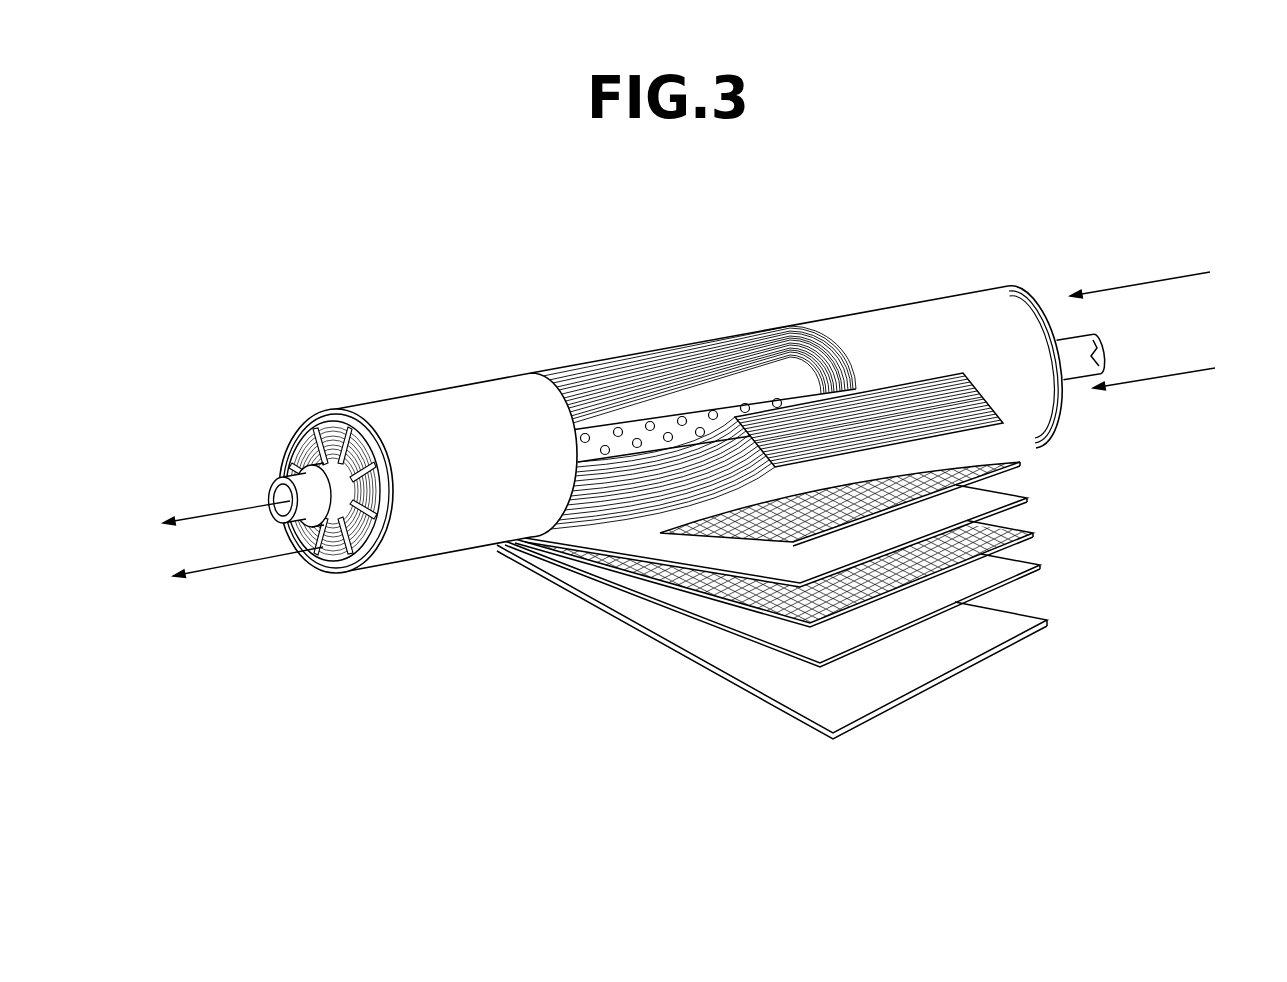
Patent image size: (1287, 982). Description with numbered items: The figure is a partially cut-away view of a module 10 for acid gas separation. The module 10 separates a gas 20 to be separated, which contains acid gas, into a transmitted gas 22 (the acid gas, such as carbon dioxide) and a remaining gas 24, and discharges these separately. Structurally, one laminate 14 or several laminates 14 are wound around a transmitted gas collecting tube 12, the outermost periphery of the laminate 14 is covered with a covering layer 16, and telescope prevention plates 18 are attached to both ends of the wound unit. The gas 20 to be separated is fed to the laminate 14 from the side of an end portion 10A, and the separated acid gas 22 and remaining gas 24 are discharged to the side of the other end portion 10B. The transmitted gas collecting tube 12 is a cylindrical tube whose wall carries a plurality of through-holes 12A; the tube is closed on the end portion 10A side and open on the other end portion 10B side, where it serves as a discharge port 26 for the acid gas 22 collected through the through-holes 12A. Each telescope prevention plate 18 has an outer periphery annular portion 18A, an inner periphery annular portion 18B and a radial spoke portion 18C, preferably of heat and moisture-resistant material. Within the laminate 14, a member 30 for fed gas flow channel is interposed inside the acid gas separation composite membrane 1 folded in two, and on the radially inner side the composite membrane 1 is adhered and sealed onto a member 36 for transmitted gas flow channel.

The acid gas separation composite membrane 1 is at (972, 498).
The module for acid gas separation 10 is at (997, 180).
The end portion 10A is at (1049, 423).
The other end portion 10B is at (323, 565).
The transmitted gas collecting tube 12 is at (760, 400).
The through-holes 12A is at (599, 450).
The laminate 14 is at (1123, 452).
The covering layer 16 is at (1047, 620).
The telescope prevention plate 18 is at (1010, 290).
The outer periphery annular portion 18A is at (333, 422).
The inner periphery annular portion 18B is at (318, 410).
The radial spoke portion 18C is at (300, 427).
The gas to be separated 20 is at (1105, 273).
The transmitted gas (acid gas) 22 is at (204, 513).
The remaining gas 24 is at (219, 569).
The discharge port 26 is at (271, 516).
The member for fed gas flow channel 30 is at (1008, 520).
The member for transmitted gas flow channel 36 is at (1012, 457).